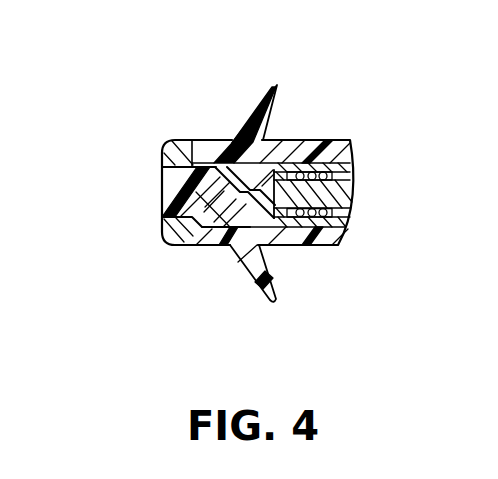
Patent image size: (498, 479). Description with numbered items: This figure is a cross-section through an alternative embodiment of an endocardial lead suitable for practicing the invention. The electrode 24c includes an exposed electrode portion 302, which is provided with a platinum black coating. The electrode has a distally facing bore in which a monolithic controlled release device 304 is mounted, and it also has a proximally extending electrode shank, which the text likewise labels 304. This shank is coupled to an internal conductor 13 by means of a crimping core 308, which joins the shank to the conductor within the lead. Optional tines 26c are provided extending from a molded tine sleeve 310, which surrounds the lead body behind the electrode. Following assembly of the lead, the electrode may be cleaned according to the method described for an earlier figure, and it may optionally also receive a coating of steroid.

The electrode 24c is at (120, 165).
The tines 26c is at (279, 87).
The internal conductor 13 is at (349, 176).
The crimping core 308 is at (340, 203).
The molded tine sleeve 310 is at (282, 240).
The monolithic controlled release device 304 is at (168, 190).
The exposed electrode portion 302 is at (186, 236).